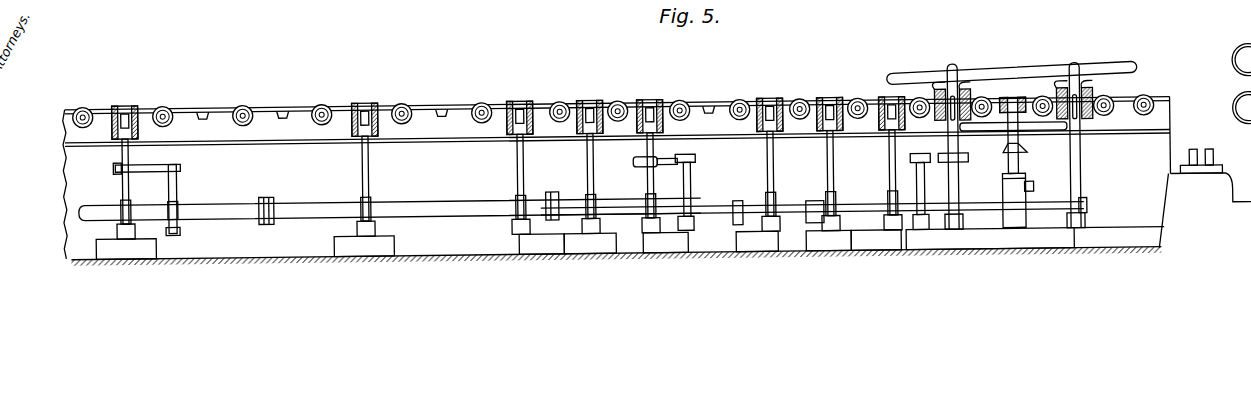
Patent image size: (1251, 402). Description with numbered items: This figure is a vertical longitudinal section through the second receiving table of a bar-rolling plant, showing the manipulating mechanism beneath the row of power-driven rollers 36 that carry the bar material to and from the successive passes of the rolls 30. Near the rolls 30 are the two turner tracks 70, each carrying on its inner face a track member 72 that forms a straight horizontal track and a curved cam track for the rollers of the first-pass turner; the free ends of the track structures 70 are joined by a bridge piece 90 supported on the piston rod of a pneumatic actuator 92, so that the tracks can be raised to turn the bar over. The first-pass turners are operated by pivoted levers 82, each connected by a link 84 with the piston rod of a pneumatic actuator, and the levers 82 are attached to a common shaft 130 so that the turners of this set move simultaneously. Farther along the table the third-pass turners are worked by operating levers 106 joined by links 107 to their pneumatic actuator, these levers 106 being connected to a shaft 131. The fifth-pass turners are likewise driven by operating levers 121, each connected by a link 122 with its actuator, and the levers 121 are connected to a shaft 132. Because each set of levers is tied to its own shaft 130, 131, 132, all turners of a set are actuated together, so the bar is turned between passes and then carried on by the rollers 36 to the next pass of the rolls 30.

The rollers 36 is at (248, 106).
The turner tracks 70 is at (1082, 94).
The track member 72 is at (963, 93).
The rolls 30 is at (1247, 104).
The operating lever 121 is at (122, 155).
The link 122 is at (128, 165).
The shaft 132 is at (315, 205).
The operating lever 106 is at (520, 164).
The links 107 is at (680, 164).
The shaft 131 is at (848, 224).
The link 84 is at (925, 171).
The operating lever 82 is at (960, 205).
The bridge piece 90 is at (1003, 141).
The pneumatic actuator 92 is at (1027, 196).
The shaft 130 is at (1086, 225).